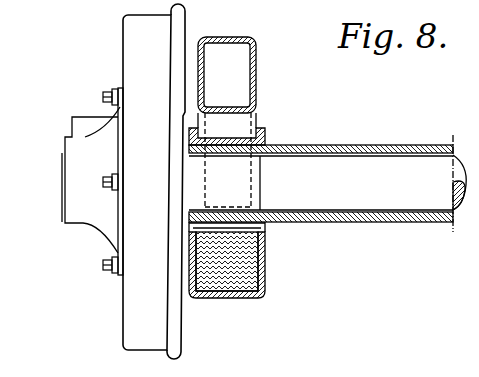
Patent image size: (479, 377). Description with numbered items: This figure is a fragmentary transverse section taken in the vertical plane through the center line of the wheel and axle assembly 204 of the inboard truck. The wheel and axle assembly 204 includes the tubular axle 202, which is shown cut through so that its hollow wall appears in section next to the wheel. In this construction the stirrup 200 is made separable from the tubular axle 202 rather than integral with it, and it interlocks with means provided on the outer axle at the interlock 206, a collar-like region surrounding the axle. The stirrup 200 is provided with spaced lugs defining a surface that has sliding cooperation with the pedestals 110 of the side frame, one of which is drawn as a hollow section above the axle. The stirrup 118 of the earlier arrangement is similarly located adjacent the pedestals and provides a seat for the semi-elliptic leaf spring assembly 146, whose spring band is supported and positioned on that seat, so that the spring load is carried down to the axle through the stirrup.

The pedestal jaws 110 is at (220, 119).
The stirrup 118 is at (223, 235).
The semi-elliptic leaf spring assembly 146 is at (252, 255).
The stirrup 200 is at (253, 293).
The tubular axle 202 is at (363, 148).
The wheel and axle assembly 204 is at (132, 312).
The interlock 206 is at (265, 140).